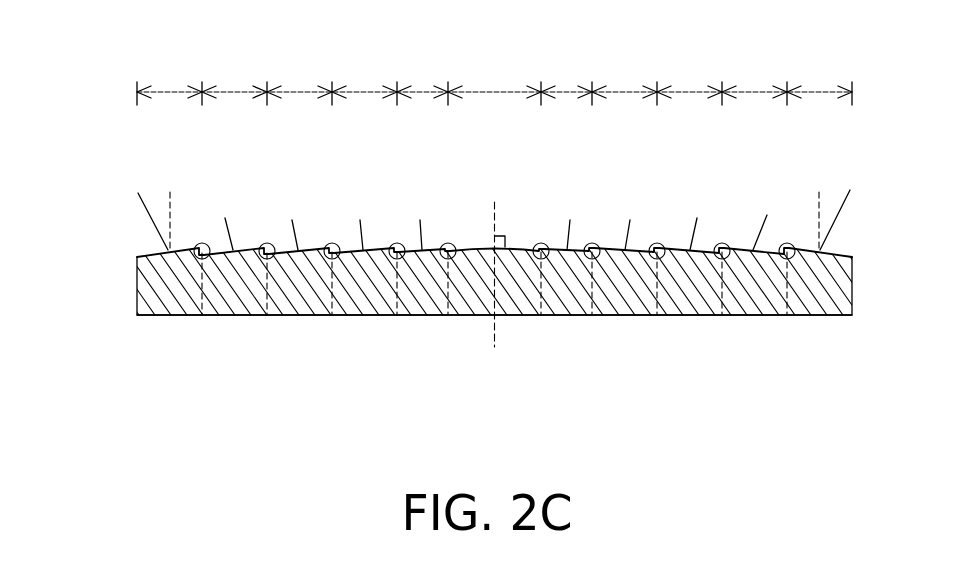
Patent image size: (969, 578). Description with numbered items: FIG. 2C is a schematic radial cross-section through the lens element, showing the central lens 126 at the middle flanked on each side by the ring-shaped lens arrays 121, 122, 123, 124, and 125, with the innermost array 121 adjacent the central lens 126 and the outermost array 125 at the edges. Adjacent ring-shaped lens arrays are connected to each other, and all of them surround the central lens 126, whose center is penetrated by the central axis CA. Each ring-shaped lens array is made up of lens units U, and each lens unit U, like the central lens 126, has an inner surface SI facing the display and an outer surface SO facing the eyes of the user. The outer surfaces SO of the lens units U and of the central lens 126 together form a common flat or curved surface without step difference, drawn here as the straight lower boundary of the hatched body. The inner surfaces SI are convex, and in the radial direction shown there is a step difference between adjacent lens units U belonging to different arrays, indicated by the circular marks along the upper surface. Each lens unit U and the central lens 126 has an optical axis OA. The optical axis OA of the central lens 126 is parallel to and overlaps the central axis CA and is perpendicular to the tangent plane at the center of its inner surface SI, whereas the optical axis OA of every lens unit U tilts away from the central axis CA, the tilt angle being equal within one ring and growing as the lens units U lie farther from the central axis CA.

The ring-shaped lens array 121 is at (494, 75).
The ring-shaped lens array 122 is at (494, 75).
The ring-shaped lens array 123 is at (494, 75).
The ring-shaped lens array 124 is at (494, 75).
The ring-shaped lens array 125 is at (494, 75).
The central lens 126 is at (494, 75).
The optical axis OA is at (760, 232).
The inner surface SI is at (137, 247).
The outer surface SO is at (169, 330).
The lens unit U is at (567, 303).
The central axis CA is at (494, 205).